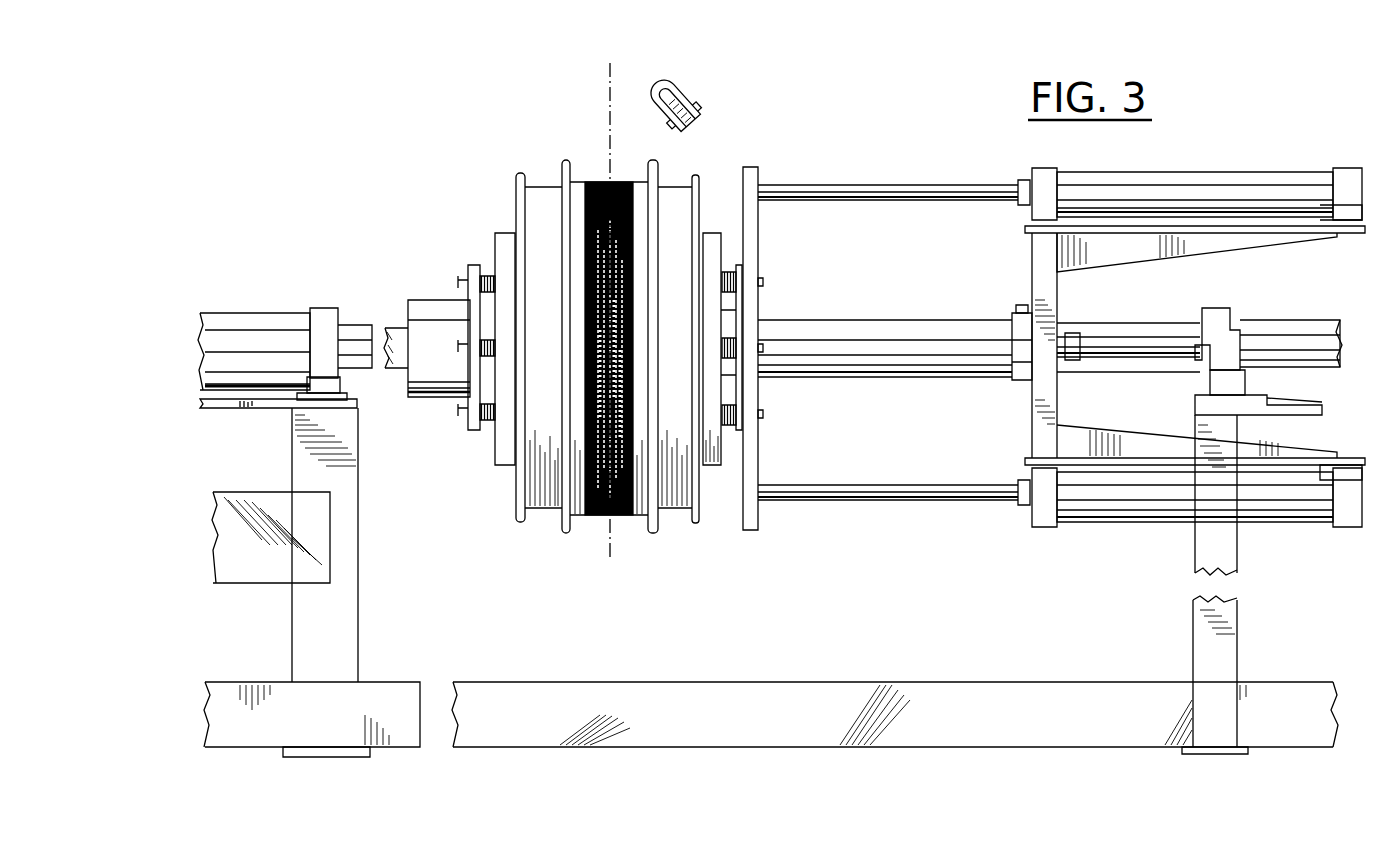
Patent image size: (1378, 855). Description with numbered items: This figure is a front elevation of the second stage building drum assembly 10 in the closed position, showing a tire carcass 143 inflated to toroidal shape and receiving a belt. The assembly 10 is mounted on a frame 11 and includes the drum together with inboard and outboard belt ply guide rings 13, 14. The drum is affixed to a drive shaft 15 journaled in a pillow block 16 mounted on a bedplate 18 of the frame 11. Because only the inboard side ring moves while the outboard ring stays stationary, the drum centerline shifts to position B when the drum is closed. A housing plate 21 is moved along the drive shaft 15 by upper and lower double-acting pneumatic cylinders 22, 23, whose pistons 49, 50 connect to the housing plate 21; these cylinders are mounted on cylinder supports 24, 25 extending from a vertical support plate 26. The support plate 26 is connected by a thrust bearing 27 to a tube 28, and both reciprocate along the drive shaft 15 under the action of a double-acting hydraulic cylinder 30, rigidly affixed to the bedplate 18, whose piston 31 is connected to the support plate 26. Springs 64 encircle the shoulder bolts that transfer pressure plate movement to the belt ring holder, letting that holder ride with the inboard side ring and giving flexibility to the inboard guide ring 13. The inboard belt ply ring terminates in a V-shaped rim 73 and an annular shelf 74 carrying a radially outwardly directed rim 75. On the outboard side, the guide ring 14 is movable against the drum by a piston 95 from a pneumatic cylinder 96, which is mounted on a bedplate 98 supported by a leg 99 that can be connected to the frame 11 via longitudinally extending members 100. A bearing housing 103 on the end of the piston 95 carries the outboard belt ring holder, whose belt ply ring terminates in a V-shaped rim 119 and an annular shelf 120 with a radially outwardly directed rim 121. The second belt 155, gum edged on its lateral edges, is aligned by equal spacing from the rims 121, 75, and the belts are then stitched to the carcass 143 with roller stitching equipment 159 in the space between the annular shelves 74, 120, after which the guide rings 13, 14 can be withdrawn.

The building drum assembly 10 is at (522, 565).
The frame 11 is at (1038, 650).
The inboard belt ply guide ring 13 is at (703, 535).
The outboard belt ply guide ring 14 is at (608, 351).
The drive shaft 15 is at (1152, 330).
The pillow block 16 is at (1215, 318).
The bedplate 18 is at (1268, 412).
The housing plate 21 is at (750, 172).
The upper double-acting pneumatic cylinder 22 is at (1230, 180).
The lower double-acting pneumatic cylinder 23 is at (1117, 505).
The cylinder support 24 is at (1200, 237).
The cylinder support 25 is at (1075, 445).
The vertical support plate 26 is at (1048, 305).
The thrust bearing 27 is at (1022, 322).
The tube 28 is at (918, 365).
The double-acting hydraulic cylinder 30 is at (1288, 333).
The piston 31 is at (1133, 345).
The piston 49 is at (875, 190).
The piston 50 is at (872, 500).
The springs 64 is at (738, 262).
The V-shaped rim 73 is at (697, 183).
The annular shelf 74 is at (672, 190).
The radially outwardly directed rim 75 is at (660, 537).
The piston 95 is at (352, 333).
The pneumatic cylinder 96 is at (247, 322).
The bedplate 98 is at (222, 408).
The leg 99 is at (358, 625).
The longitudinally extending members 100 is at (717, 688).
The bearing housing 103 is at (427, 303).
The V-shaped rim 119 is at (512, 522).
The annular shelf 120 is at (540, 187).
The radially outwardly directed rim 121 is at (565, 537).
The tire carcass 143 is at (620, 330).
The second belt 155 is at (597, 182).
The roller stitching equipment 159 is at (650, 135).
The position B is at (620, 297).